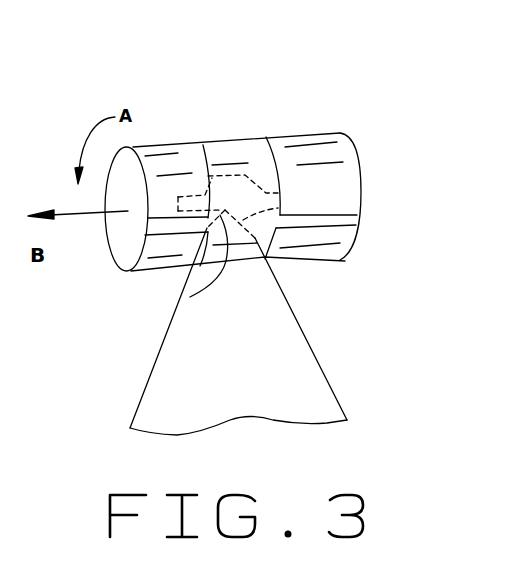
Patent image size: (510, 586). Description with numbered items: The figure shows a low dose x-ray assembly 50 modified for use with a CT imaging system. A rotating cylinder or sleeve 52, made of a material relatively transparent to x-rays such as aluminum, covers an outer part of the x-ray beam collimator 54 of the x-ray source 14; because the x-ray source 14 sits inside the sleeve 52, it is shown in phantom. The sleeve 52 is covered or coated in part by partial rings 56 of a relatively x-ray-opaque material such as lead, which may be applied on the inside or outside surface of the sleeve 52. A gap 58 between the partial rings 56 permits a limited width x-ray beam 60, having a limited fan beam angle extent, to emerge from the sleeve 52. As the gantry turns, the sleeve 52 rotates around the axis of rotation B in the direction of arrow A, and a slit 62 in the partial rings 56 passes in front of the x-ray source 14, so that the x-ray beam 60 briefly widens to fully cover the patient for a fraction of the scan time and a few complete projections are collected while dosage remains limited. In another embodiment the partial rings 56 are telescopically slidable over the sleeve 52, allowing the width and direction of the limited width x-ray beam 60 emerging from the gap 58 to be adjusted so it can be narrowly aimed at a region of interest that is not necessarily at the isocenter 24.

The low dose x-ray assembly 50 is at (327, 78).
The sleeve 52 is at (362, 173).
The partial rings 56 is at (160, 145).
The gap 58 is at (223, 136).
The slit 62 is at (348, 217).
The x-ray source 14 is at (243, 173).
The x-ray beam collimator 54 is at (190, 297).
The center of rotation 24 is at (279, 331).
The limited width x-ray beam 60 is at (344, 415).